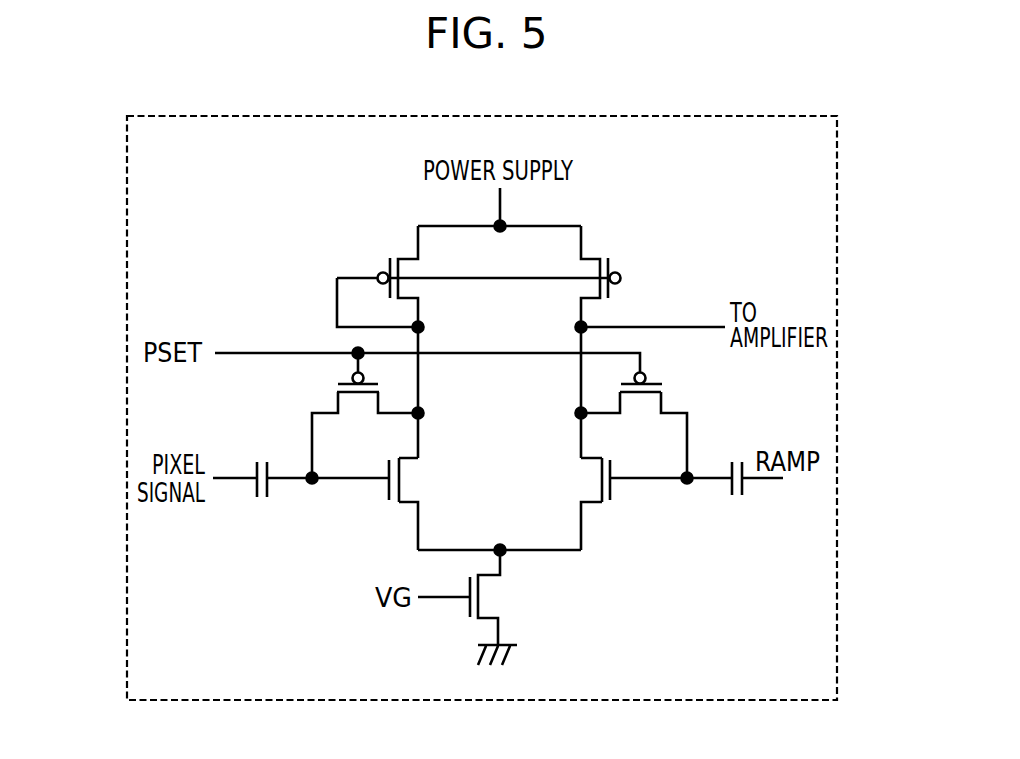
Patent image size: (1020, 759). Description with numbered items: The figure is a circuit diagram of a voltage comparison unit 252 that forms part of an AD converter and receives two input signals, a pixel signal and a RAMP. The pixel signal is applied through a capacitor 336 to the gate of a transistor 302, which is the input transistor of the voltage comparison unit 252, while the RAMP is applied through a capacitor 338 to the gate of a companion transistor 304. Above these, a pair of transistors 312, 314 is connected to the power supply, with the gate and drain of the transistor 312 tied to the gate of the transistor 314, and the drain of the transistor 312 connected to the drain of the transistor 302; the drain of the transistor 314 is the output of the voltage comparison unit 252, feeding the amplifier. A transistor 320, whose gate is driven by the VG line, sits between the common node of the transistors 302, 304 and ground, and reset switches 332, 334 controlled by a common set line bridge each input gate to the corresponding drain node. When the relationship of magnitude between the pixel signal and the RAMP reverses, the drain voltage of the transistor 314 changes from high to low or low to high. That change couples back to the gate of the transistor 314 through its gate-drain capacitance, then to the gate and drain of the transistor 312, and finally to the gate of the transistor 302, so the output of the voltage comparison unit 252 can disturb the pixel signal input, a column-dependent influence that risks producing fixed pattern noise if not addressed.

The voltage comparison unit 252 is at (745, 116).
The transistor 312 is at (386, 264).
The transistor 314 is at (612, 264).
The transistor 302 is at (407, 480).
The NMOS transistor (ramp input) 304 is at (590, 480).
The current source transistor 320 is at (488, 599).
The reset switch transistor 332 is at (359, 398).
The reset switch transistor 334 is at (641, 398).
The input capacitor (pixel signal) 336 is at (255, 490).
The input capacitor (ramp) 338 is at (744, 492).